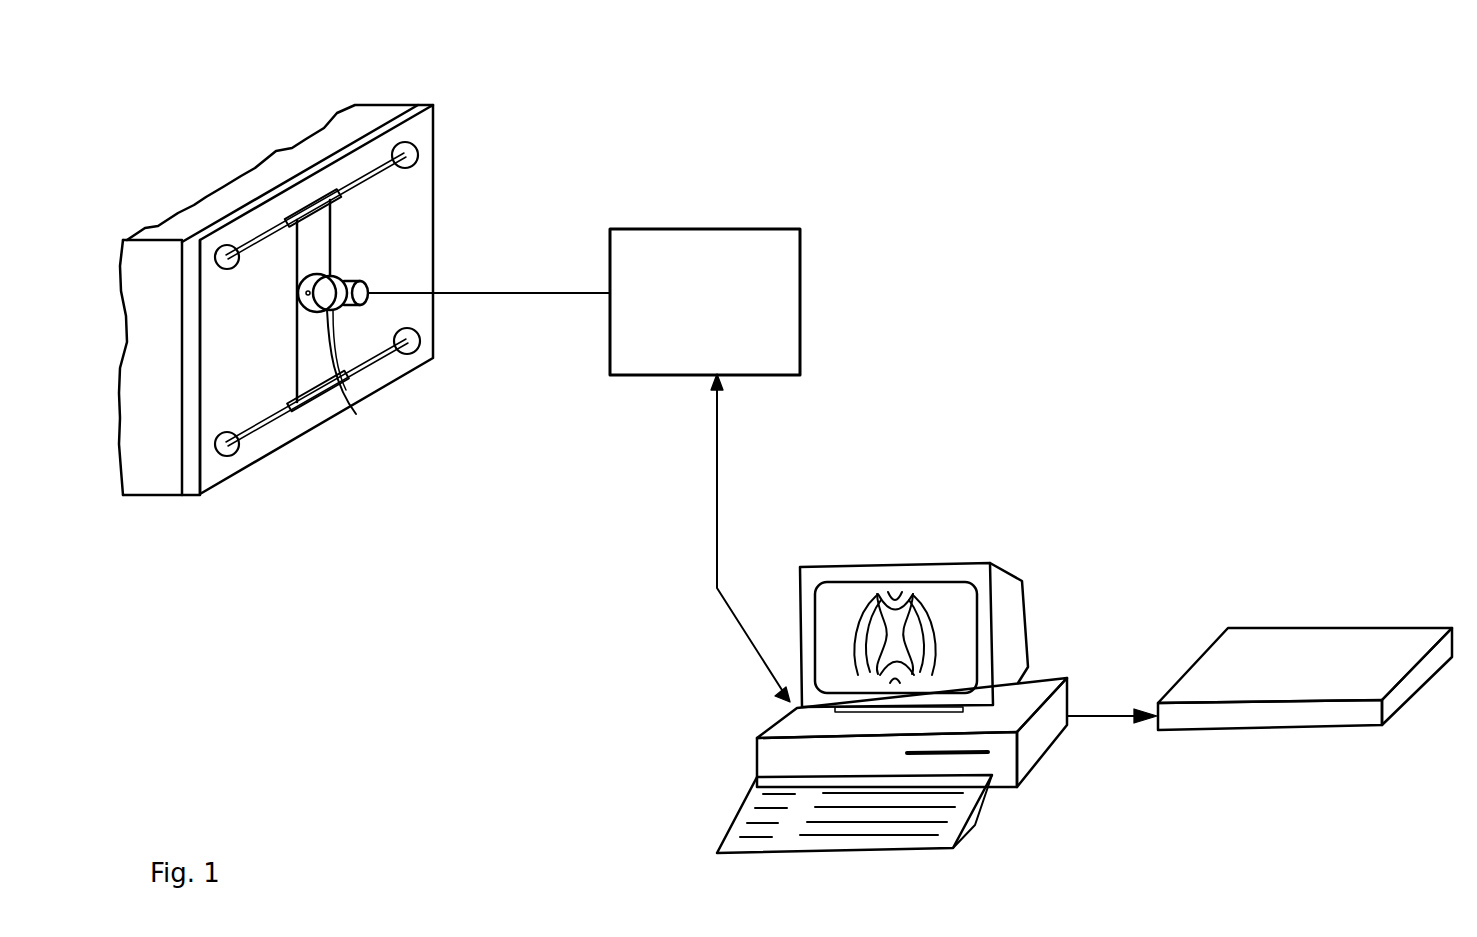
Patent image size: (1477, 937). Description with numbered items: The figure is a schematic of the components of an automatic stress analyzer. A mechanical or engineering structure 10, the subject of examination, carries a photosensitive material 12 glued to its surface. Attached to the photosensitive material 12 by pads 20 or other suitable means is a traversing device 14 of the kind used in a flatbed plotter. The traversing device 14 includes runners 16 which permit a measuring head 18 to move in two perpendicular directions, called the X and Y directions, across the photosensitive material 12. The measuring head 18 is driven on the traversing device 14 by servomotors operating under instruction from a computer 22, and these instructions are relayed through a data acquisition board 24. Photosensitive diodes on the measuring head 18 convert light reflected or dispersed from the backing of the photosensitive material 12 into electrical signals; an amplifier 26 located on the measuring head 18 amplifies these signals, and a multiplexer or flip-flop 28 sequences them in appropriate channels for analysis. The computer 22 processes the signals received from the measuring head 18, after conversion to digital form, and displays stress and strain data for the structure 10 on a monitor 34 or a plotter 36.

The mechanical or engineering structure 10 is at (172, 497).
The photosensitive material 12 is at (387, 102).
The traversing device 14 is at (262, 430).
The runners 16 is at (297, 328).
The measuring head 18 is at (347, 278).
The pads 20 is at (223, 255).
The computer 22 is at (778, 723).
The data acquisition board 24 is at (705, 228).
The amplifier 26 is at (356, 414).
The multiplexer or flip-flop 28 is at (367, 293).
The monitor 34 is at (888, 563).
The plotter 36 is at (1297, 628).